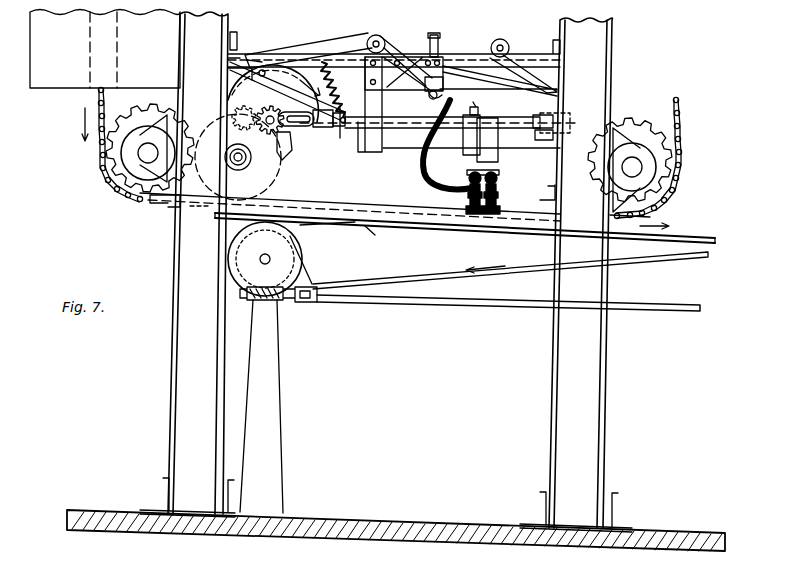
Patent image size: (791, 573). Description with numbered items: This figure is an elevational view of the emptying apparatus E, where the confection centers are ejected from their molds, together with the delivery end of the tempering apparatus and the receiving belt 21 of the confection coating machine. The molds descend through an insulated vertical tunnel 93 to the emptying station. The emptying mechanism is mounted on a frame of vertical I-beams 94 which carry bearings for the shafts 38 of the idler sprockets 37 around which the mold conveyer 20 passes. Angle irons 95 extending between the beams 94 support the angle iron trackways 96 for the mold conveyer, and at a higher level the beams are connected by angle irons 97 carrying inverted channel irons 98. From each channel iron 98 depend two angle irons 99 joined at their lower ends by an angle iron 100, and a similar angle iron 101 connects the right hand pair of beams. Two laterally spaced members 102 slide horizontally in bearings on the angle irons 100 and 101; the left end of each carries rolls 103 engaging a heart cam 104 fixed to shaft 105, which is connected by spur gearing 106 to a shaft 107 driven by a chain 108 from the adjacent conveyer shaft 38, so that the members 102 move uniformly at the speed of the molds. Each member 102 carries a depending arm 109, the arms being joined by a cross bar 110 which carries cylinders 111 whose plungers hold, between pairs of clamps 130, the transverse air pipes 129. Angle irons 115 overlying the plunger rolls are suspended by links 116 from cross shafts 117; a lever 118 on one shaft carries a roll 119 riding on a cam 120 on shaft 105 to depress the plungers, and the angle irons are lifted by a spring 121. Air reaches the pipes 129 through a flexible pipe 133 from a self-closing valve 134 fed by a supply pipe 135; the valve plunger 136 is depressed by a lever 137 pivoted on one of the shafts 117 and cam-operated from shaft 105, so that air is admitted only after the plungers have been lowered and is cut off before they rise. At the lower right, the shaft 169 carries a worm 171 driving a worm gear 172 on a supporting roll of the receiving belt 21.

The chain 20 is at (108, 184).
The belt 21 is at (450, 234).
The idler sprockets 37 is at (122, 194).
The shafts 38 is at (140, 200).
The vertical tunnel 93 is at (105, 49).
The vertical I-beams 94 is at (386, 272).
The angle irons 95 is at (170, 210).
The angle iron trackways 96 is at (364, 197).
The angle irons 97 is at (240, 38).
The inverted channel irons 98 is at (262, 60).
The angle irons 99 is at (375, 153).
The angle iron 100 is at (343, 139).
The angle iron 101 is at (557, 148).
The members 102 is at (404, 128).
The rolls 103 is at (232, 112).
The heart cam 104 is at (318, 127).
The shaft 105 is at (240, 123).
The spur gearing 106 is at (292, 140).
The shaft 107 is at (240, 160).
The chain 108 is at (195, 223).
The depending arm 109 is at (478, 102).
The cross bar 110 is at (466, 148).
The cylinders 111 is at (498, 150).
The angle irons 115 is at (539, 113).
The links 116 is at (416, 86).
The cross shafts 117 is at (376, 35).
The lever 118 is at (334, 57).
The roll 119 is at (230, 58).
The cam 120 is at (230, 70).
The spring 121 is at (336, 74).
The pipes 129 is at (470, 176).
The clamps 130 is at (498, 176).
The flexible pipe 133 is at (456, 188).
The valve 134 is at (443, 82).
The pipe 135 is at (440, 36).
The plunger 136 is at (440, 54).
The lever 137 is at (300, 54).
The shaft 169 is at (428, 305).
The worm 171 is at (280, 304).
The worm gear 172 is at (246, 261).
The emptying apparatus E is at (628, 53).